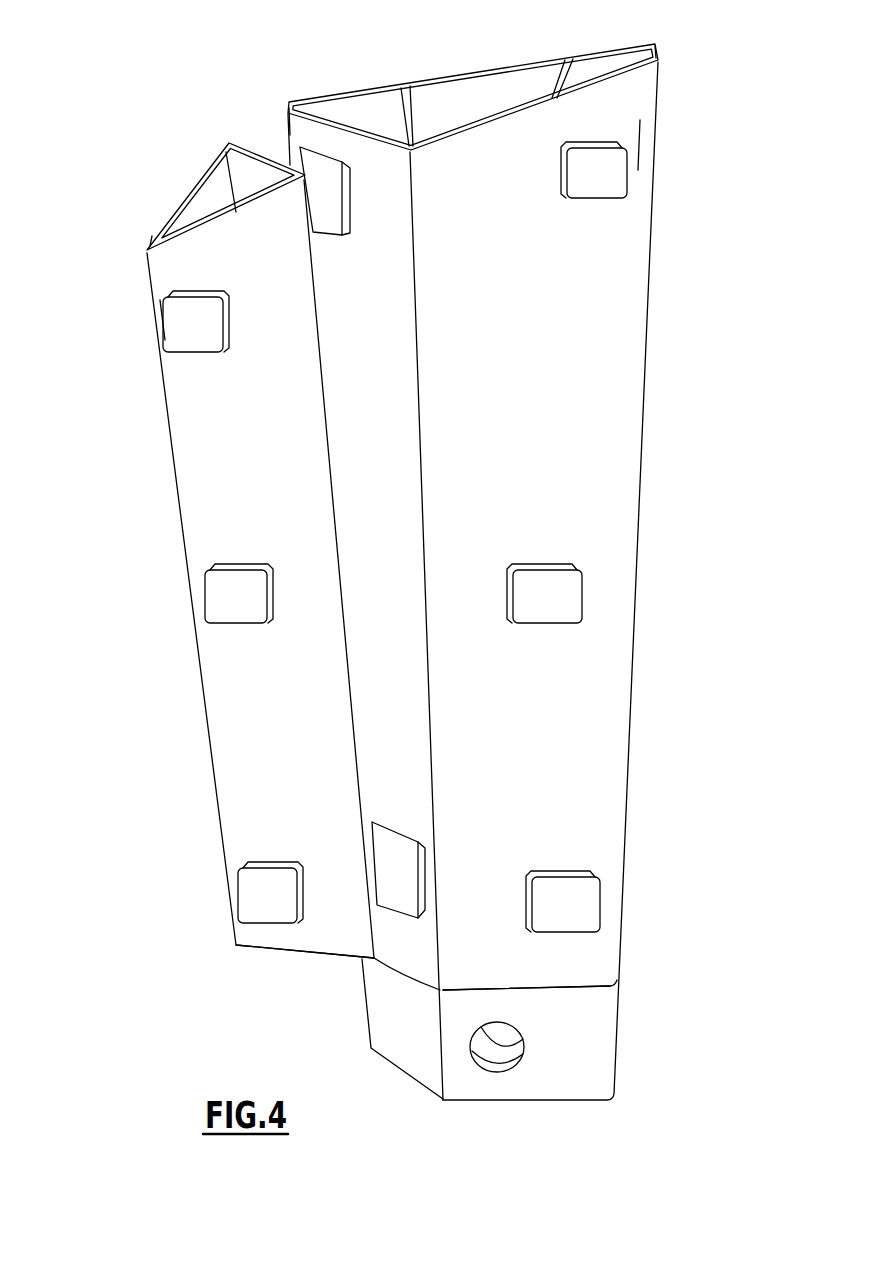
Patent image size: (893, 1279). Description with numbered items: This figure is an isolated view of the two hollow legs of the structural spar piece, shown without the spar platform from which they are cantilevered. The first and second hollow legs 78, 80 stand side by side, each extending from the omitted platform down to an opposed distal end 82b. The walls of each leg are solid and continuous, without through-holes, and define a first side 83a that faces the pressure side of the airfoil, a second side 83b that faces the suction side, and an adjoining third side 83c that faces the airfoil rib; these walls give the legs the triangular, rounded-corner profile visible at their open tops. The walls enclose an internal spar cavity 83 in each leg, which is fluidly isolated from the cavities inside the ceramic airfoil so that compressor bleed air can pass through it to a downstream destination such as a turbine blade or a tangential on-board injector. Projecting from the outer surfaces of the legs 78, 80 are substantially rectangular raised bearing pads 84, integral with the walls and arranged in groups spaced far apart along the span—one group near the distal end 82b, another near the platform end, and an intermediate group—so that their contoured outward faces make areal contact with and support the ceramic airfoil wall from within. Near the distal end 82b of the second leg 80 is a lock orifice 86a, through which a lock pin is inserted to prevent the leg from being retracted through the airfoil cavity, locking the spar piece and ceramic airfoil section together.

The first hollow leg 78 is at (205, 525).
The second hollow leg 80 is at (607, 415).
The distal end 82b is at (198, 851).
The internal spar cavity 83 is at (193, 222).
The first side 83a is at (185, 262).
The second side 83b is at (152, 228).
The third side 83c is at (302, 132).
The raised bearing pad 84 is at (175, 333).
The lock orifice 86a is at (497, 1050).